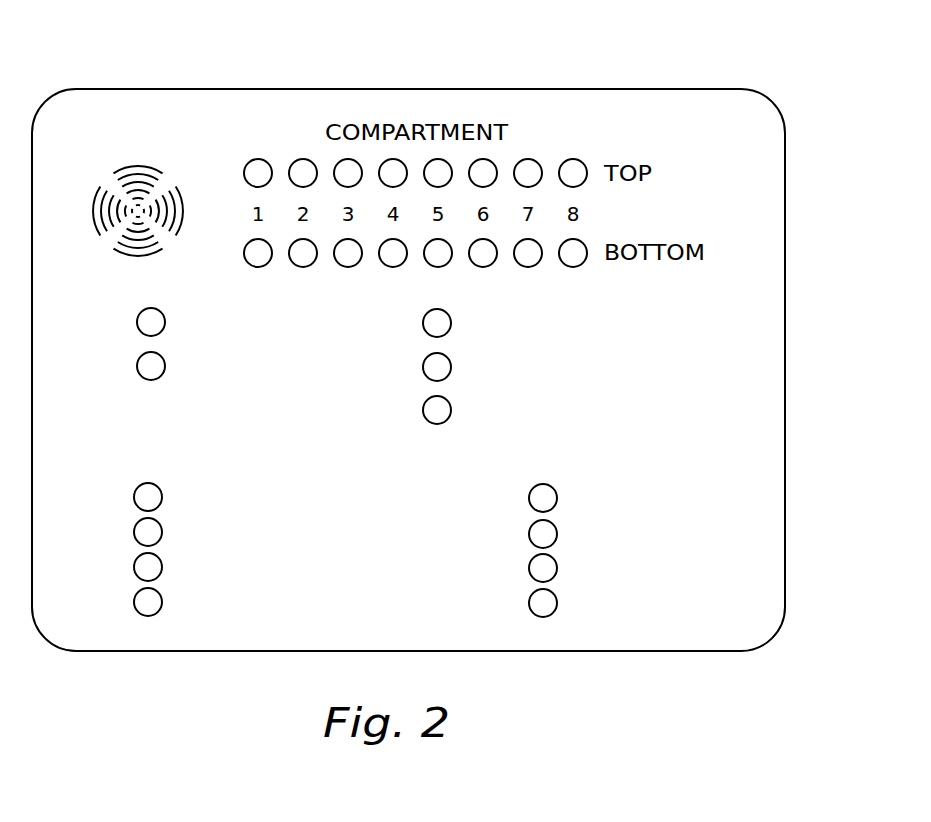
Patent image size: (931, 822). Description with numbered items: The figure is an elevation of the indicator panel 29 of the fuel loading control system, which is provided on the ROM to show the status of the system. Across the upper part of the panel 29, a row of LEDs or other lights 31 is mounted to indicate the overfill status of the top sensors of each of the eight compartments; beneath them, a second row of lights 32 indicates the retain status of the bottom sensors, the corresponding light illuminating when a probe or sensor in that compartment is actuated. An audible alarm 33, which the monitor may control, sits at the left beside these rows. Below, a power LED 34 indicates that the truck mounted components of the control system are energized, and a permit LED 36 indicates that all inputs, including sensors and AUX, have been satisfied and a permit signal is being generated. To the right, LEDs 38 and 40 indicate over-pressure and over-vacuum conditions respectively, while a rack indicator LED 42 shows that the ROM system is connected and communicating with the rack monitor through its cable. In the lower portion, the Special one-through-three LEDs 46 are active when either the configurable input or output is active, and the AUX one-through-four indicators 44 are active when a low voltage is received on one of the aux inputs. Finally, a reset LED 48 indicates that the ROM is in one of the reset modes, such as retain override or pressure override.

The indicator panel 29 is at (700, 65).
The lights 31 is at (297, 161).
The lights 32 is at (440, 267).
The audible alarm 33 is at (130, 167).
The power LED 34 is at (141, 356).
The LED 36 is at (141, 312).
The LED 38 is at (426, 331).
The LED 40 is at (427, 376).
The rack indicator LED 42 is at (427, 418).
The AUX 1–4 indicators 44 is at (529, 603).
The Special 1–3 LEDs 46 is at (134, 567).
The LED 48 is at (134, 602).